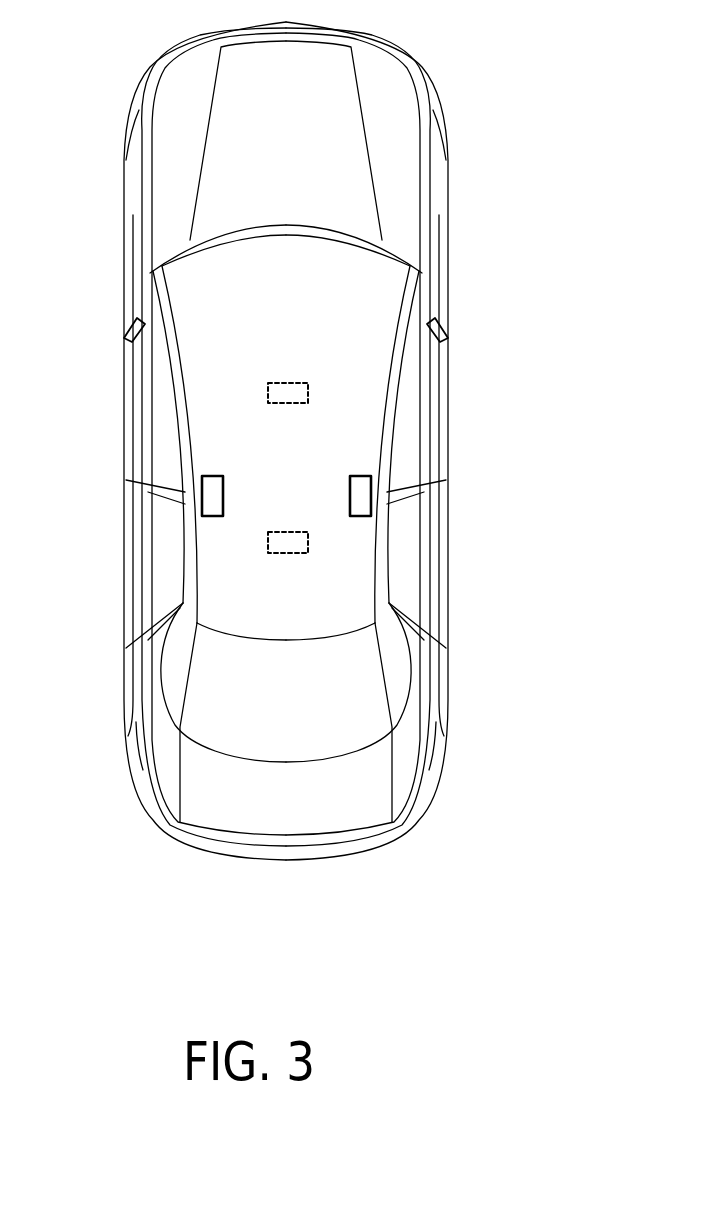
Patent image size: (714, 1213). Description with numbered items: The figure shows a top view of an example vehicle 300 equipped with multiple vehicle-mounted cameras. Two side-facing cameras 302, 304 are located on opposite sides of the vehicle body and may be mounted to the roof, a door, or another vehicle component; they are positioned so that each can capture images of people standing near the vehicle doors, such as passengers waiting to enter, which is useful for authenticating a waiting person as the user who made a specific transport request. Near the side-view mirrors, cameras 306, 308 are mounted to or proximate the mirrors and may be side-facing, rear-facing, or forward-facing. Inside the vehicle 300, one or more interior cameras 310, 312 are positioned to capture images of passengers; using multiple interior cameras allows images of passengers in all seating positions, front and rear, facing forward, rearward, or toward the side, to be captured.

The vehicle 300 is at (163, 55).
The side-facing camera 302 is at (201, 478).
The side-facing camera 304 is at (372, 478).
The camera 306 is at (128, 328).
The camera 308 is at (445, 325).
The interior camera 310 is at (307, 390).
The interior camera 312 is at (307, 540).